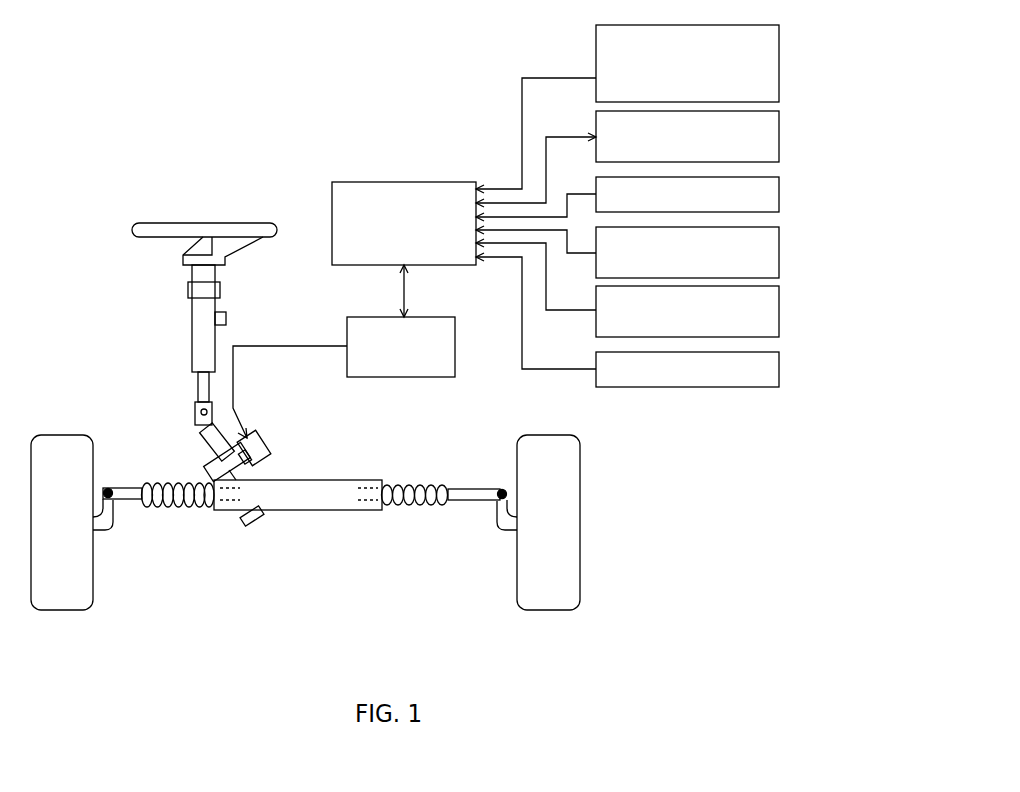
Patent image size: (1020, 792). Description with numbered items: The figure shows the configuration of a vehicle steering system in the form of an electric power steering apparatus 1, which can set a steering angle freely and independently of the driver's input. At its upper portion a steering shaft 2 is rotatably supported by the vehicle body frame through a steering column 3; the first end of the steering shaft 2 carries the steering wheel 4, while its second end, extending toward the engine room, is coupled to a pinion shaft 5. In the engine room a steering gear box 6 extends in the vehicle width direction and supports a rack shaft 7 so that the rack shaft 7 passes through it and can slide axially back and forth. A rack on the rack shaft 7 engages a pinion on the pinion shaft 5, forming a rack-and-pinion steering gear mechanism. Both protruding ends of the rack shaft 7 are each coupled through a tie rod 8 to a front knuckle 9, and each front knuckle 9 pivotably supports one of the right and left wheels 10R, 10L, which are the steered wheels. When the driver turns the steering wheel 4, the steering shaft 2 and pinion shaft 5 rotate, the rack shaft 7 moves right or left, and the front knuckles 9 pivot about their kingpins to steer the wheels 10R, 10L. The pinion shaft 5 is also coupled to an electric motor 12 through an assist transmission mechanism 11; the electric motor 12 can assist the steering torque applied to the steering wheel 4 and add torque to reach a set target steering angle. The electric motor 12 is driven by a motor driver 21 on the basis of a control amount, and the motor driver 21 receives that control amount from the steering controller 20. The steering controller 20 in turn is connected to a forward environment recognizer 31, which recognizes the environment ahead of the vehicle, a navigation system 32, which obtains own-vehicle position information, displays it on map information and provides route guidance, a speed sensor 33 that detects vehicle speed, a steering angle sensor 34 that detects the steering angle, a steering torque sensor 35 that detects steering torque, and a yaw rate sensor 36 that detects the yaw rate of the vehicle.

The electric power steering apparatus 1 is at (110, 362).
The steering shaft 2 is at (198, 392).
The steering column 3 is at (192, 330).
The steering wheel 4 is at (205, 223).
The pinion shaft 5 is at (212, 446).
The steering gear box 6 is at (316, 510).
The rack shaft 7 is at (365, 480).
The tie rod 8 is at (130, 500).
The front knuckle 9 is at (95, 530).
The right wheel 10R is at (60, 610).
The left wheel 10L is at (548, 610).
The assist transmission mechanism 11 is at (212, 471).
The electric motor 12 is at (268, 445).
The steering controller 20 is at (407, 182).
The motor driver 21 is at (439, 317).
The forward environment recognizer 31 is at (779, 64).
The navigation system 32 is at (779, 136).
The speed sensor 33 is at (779, 193).
The steering angle sensor 34 is at (779, 252).
The steering torque sensor 35 is at (779, 309).
The yaw rate sensor 36 is at (779, 368).